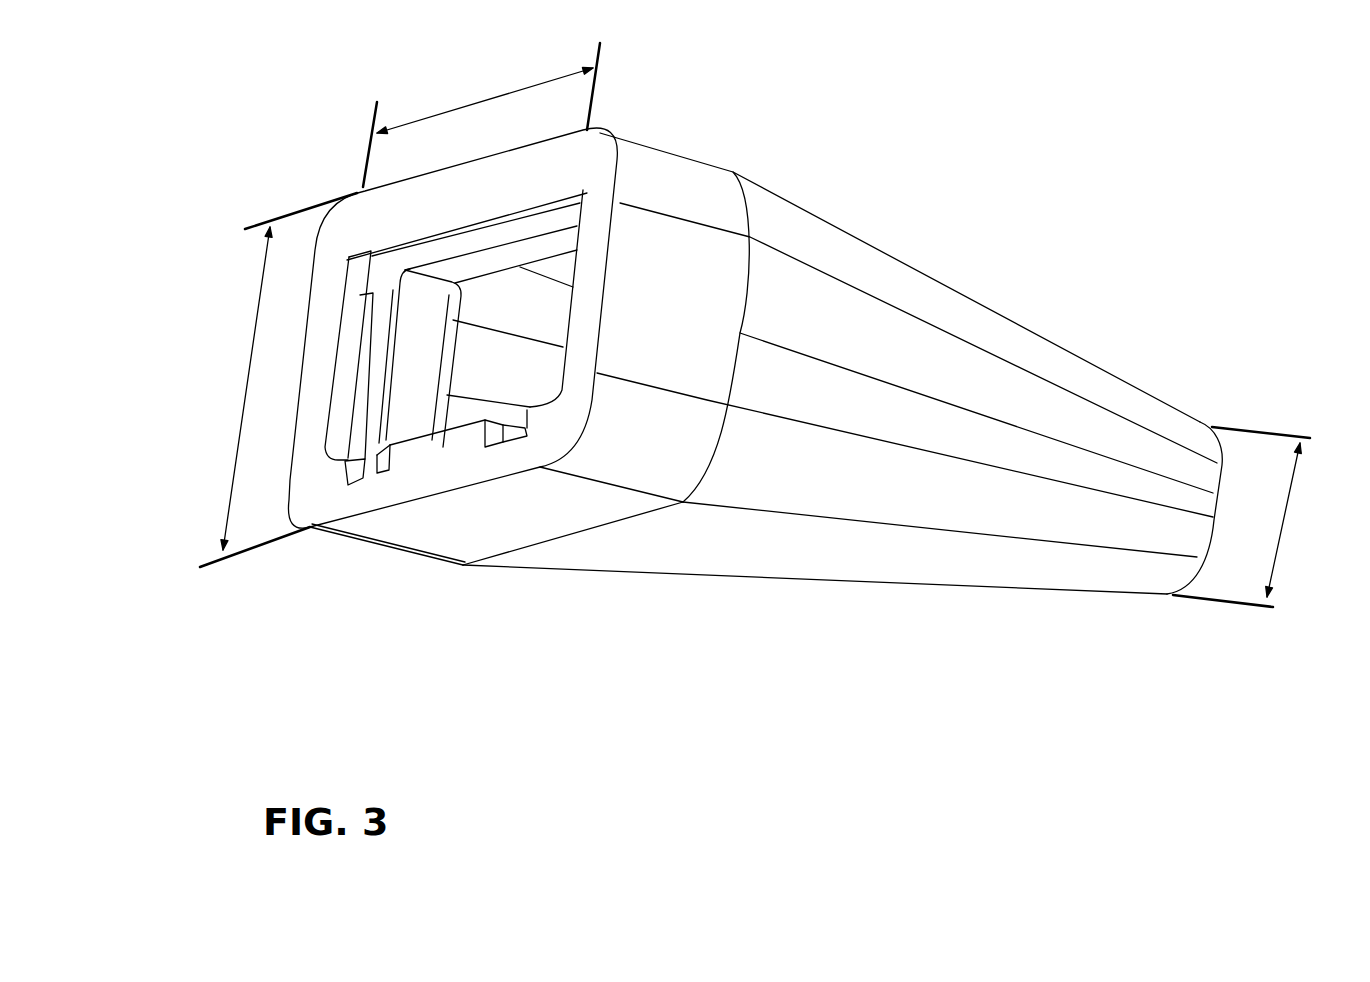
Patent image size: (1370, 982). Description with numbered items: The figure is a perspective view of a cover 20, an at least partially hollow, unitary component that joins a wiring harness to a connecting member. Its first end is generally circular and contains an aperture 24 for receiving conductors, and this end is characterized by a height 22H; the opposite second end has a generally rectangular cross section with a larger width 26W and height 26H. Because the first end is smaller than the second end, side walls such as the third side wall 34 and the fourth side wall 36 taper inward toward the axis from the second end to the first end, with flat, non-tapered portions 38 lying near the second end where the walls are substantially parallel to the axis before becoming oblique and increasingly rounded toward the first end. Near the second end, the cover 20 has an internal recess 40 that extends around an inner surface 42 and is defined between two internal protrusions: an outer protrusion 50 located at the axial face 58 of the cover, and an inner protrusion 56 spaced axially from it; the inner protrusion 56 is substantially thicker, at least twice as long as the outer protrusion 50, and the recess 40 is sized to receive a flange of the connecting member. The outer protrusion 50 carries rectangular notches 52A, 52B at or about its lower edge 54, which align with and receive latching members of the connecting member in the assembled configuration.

The cover 20 is at (896, 378).
The height of first end 22H is at (1283, 530).
The aperture 24 is at (1230, 530).
The height of second end 26H is at (250, 378).
The width of second end 26W is at (438, 113).
The third side wall 34 is at (812, 297).
The fourth side wall 36 is at (853, 540).
The flat or non-tapered portion 38 is at (663, 283).
The internal recess 40 is at (373, 267).
The inner surface 42 is at (514, 297).
The outer protrusion 50 is at (448, 252).
The notch 52A is at (363, 490).
The notch 52B is at (509, 450).
The edge of outer protrusion 54 is at (446, 450).
The inner protrusion 56 is at (546, 250).
The axial face 58 is at (463, 453).